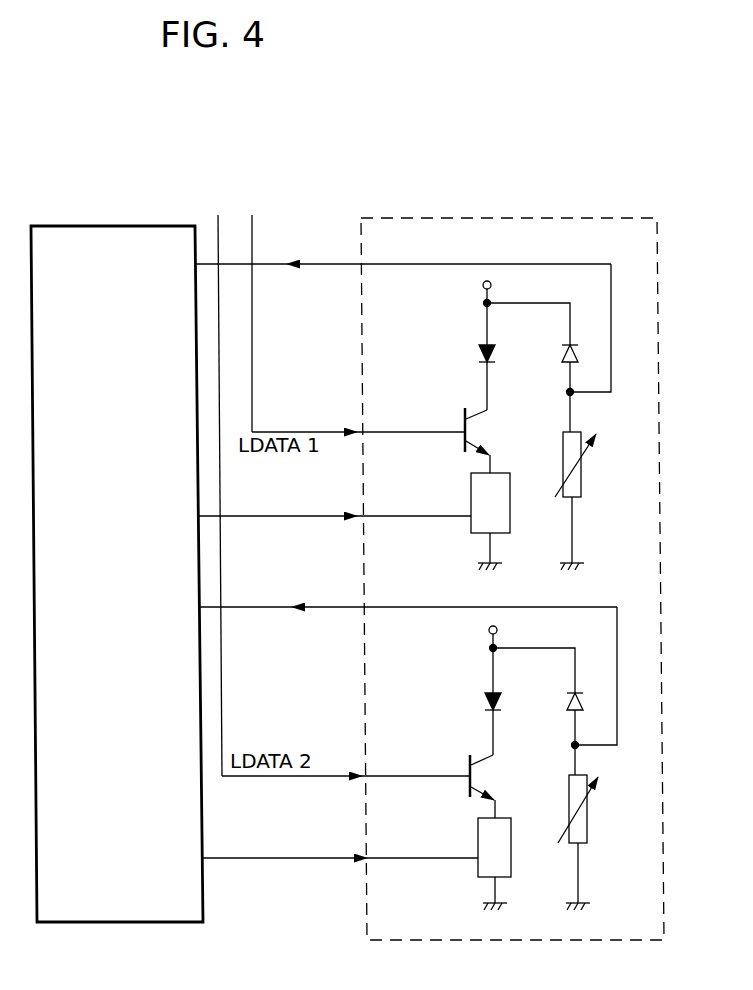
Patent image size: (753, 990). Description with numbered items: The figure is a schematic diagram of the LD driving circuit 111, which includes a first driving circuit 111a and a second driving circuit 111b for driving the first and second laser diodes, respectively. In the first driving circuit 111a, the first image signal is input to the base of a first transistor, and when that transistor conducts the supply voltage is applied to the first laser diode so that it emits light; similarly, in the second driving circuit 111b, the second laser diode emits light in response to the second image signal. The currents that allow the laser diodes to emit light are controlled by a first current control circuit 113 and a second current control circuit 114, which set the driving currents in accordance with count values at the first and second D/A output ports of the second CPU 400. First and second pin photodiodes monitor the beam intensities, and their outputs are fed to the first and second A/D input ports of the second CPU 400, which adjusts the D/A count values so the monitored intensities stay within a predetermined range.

The second CPU 400 is at (113, 226).
The LD driving circuit 111 is at (562, 222).
The first driving circuit 111a is at (572, 414).
The second driving circuit 111b is at (577, 763).
The first current control circuit 113 is at (521, 457).
The second current control circuit 114 is at (520, 800).